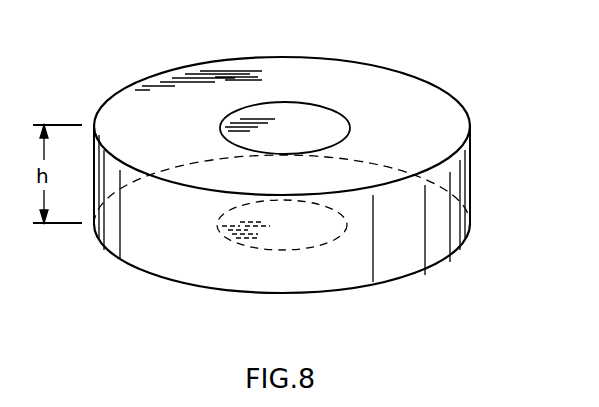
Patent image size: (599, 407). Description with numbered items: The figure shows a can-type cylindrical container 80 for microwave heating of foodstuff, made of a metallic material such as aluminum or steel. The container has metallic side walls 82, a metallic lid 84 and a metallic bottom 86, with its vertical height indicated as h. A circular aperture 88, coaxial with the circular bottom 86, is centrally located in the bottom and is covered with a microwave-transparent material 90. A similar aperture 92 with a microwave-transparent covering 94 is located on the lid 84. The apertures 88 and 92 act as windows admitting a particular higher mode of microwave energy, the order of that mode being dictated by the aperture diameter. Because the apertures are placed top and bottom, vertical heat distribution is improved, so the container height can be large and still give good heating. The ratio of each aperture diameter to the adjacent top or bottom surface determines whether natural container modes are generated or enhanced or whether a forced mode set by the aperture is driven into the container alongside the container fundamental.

The can-type cylindrical container 80 is at (333, 178).
The metallic side walls 82 is at (443, 197).
The metallic lid 84 is at (418, 98).
The metallic bottom 86 is at (400, 262).
The circular aperture 88 is at (267, 247).
The microwave-transparent material 90 is at (308, 236).
The aperture 92 is at (258, 108).
The microwave-transparent covering 94 is at (306, 139).